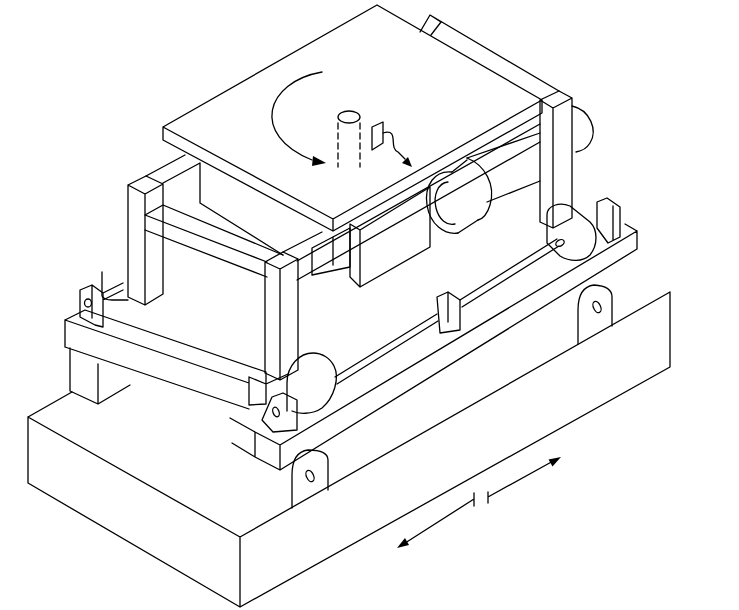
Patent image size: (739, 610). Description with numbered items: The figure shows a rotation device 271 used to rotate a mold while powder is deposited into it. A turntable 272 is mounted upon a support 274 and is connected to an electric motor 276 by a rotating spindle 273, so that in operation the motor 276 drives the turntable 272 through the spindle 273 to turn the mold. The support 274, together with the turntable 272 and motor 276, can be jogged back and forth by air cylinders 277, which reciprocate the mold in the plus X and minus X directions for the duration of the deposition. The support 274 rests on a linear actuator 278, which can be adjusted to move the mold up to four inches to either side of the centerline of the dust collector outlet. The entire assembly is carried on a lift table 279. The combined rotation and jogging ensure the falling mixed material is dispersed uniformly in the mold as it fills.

The rotation device 271 is at (100, 132).
The turntable 272 is at (296, 50).
The rotating spindle 273 is at (350, 110).
The support 274 is at (573, 168).
The electric motor 276 is at (387, 268).
The air cylinders 277 is at (550, 262).
The linear actuator 278 is at (331, 437).
The lift table 279 is at (593, 405).